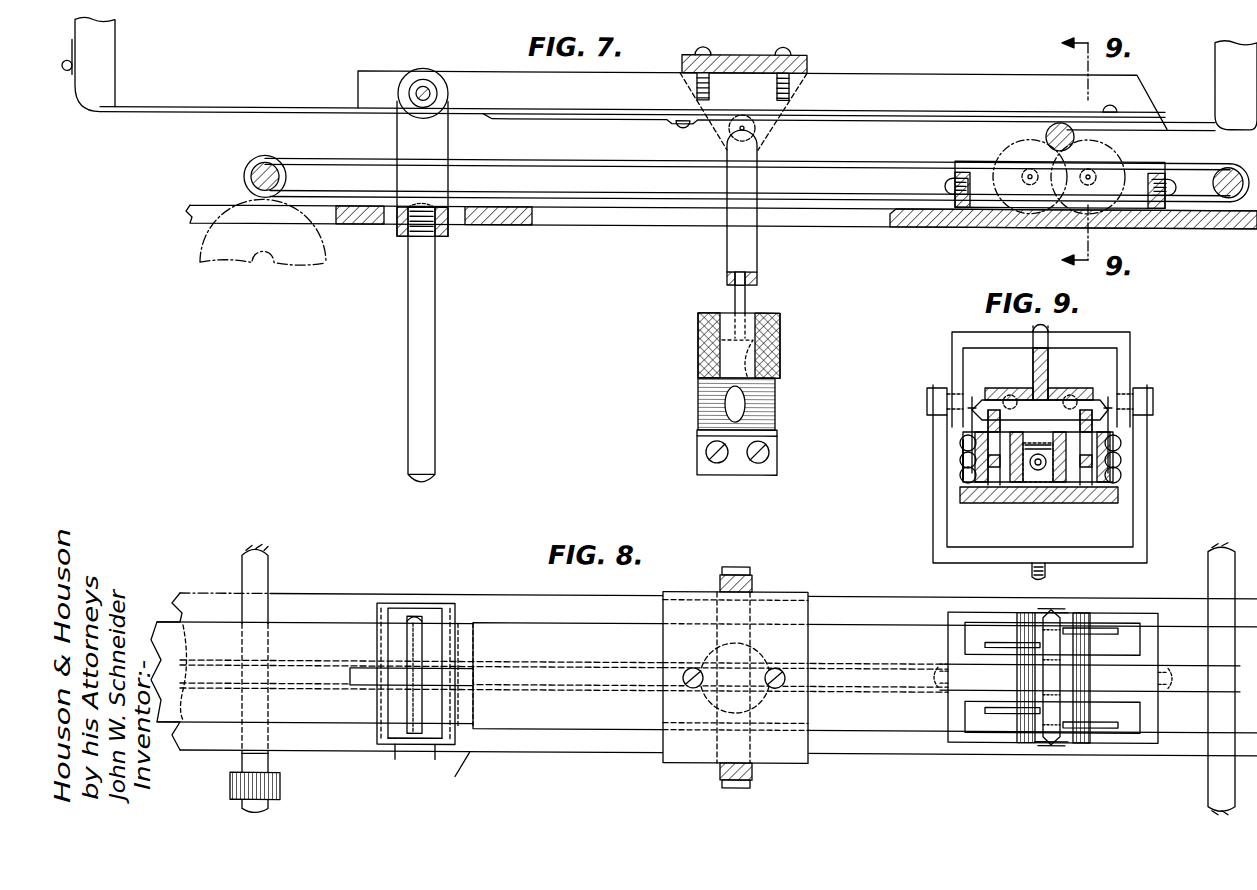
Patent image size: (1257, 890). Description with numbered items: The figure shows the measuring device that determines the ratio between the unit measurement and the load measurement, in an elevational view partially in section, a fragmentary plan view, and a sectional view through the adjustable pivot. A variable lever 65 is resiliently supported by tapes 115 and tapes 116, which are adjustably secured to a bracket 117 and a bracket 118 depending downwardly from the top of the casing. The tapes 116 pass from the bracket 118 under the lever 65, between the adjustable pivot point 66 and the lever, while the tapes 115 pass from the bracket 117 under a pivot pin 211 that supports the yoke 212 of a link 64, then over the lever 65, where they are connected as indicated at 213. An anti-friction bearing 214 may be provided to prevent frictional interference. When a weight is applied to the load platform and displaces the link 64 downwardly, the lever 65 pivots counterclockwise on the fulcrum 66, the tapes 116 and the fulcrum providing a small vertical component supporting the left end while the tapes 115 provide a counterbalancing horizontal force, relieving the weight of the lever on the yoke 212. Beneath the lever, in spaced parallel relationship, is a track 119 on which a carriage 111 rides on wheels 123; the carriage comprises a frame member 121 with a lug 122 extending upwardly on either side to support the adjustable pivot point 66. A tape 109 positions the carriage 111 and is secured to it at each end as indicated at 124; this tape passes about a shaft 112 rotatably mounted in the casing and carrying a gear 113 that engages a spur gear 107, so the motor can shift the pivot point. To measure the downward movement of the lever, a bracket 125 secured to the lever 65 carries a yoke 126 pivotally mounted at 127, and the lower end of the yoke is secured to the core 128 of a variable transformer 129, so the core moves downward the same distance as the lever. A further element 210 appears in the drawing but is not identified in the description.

In FIG. 7, the link 64 is at (410, 375).
In FIG. 8, the link 64 is at (400, 612).
In FIG. 7, the variable lever 65 is at (456, 70).
In FIG. 8, the variable lever 65 is at (528, 730).
In FIG. 9, the variable lever 65 is at (1050, 363).
In FIG. 7, the adjustable pivot point 66 is at (1054, 120).
In FIG. 8, the adjustable pivot point 66 is at (1040, 671).
In FIG. 9, the adjustable pivot point 66 is at (1050, 421).
In FIG. 7, the spur gear 107 is at (198, 265).
In FIG. 7, the tape 109 is at (565, 162).
In FIG. 8, the tape 109 is at (360, 700).
In FIG. 9, the tape 109 is at (1030, 453).
In FIG. 7, the carriage 111 is at (1212, 159).
In FIG. 9, the carriage 111 is at (1120, 470).
In FIG. 7, the shaft 112 is at (242, 176).
In FIG. 8, the shaft 112 is at (272, 563).
In FIG. 7, the gear 113 is at (255, 163).
In FIG. 8, the gear 113 is at (230, 789).
In FIG. 7, the tapes 115 is at (268, 107).
In FIG. 8, the tapes 115 is at (335, 605).
In FIG. 9, the tapes 115 is at (990, 388).
In FIG. 7, the tapes 116 is at (1180, 115).
In FIG. 9, the tapes 116 is at (1008, 394).
In FIG. 7, the bracket 117 is at (108, 66).
In FIG. 7, the bracket 118 is at (1218, 52).
In FIG. 7, the track 119 is at (592, 222).
In FIG. 8, the track 119 is at (445, 773).
In FIG. 9, the track 119 is at (1120, 500).
In FIG. 7, the frame member 121 is at (960, 206).
In FIG. 8, the frame member 121 is at (1148, 612).
In FIG. 9, the frame member 121 is at (968, 470).
In FIG. 7, the lug 122 is at (1025, 133).
In FIG. 8, the lug 122 is at (1060, 605).
In FIG. 9, the lug 122 is at (962, 436).
In FIG. 7, the wheels 123 is at (1108, 150).
In FIG. 8, the wheels 123 is at (995, 636).
In FIG. 9, the wheels 123 is at (993, 487).
In FIG. 7, the tape attachment points 124 is at (945, 183).
In FIG. 8, the tape attachment points 124 is at (938, 660).
In FIG. 9, the tape attachment points 124 is at (1042, 472).
In FIG. 7, the bracket 125 is at (738, 52).
In FIG. 8, the bracket 125 is at (685, 760).
In FIG. 9, the bracket 125 is at (955, 333).
In FIG. 7, the yoke 126 is at (728, 255).
In FIG. 8, the yoke 126 is at (720, 617).
In FIG. 9, the yoke 126 is at (935, 540).
In FIG. 7, the pivot 127 is at (730, 143).
In FIG. 8, the pivot 127 is at (745, 565).
In FIG. 9, the pivot 127 is at (927, 403).
In FIG. 7, the core 128 is at (722, 357).
In FIG. 8, the core 128 is at (772, 654).
In FIG. 7, the variable transformer 129 is at (700, 402).
In FIG. 7, the screw 210 is at (675, 125).
In FIG. 7, the pivot pin 211 is at (424, 84).
In FIG. 8, the pivot pin 211 is at (405, 640).
In FIG. 7, the yoke 212 is at (400, 131).
In FIG. 8, the yoke 212 is at (398, 748).
In FIG. 7, the tape connection 213 is at (1118, 96).
In FIG. 7, the anti-friction bearing 214 is at (440, 95).
In FIG. 8, the anti-friction bearing 214 is at (440, 655).